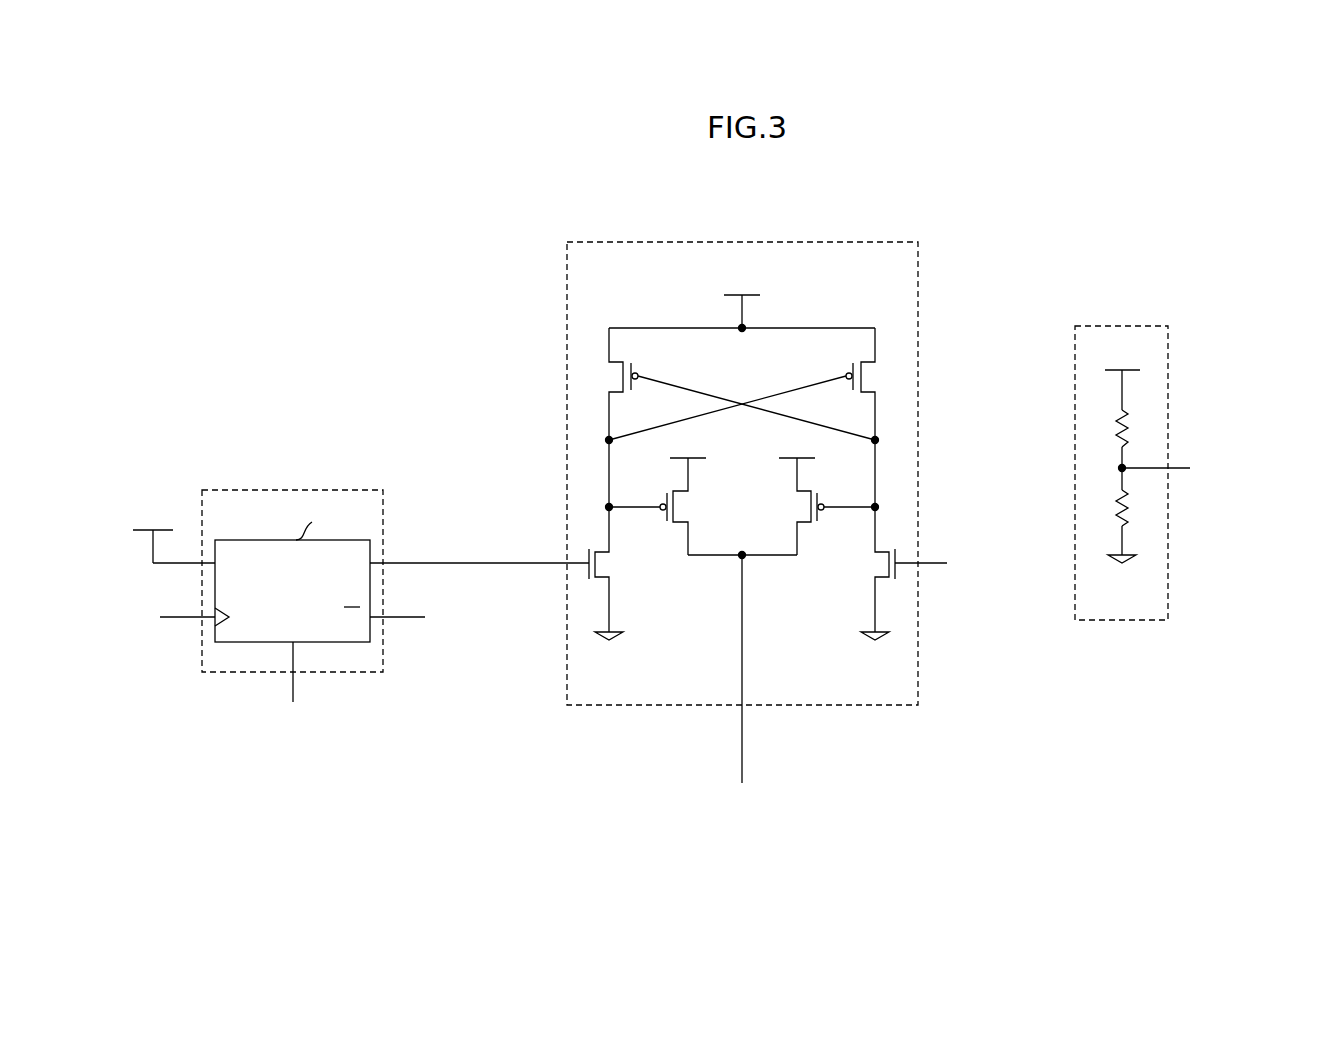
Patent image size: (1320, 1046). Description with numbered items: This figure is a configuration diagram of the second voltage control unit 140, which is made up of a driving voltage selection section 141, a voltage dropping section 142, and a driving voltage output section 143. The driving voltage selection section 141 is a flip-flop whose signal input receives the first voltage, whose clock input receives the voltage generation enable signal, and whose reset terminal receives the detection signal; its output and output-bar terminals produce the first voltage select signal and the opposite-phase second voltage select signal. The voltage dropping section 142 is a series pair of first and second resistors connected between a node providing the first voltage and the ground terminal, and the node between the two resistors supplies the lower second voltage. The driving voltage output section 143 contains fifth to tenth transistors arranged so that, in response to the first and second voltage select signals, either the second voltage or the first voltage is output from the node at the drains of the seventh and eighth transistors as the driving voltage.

The second voltage control unit 140 is at (1283, 243).
The driving voltage selection section 141 is at (368, 490).
The voltage dropping section 142 is at (1145, 326).
The driving voltage output section 143 is at (877, 242).